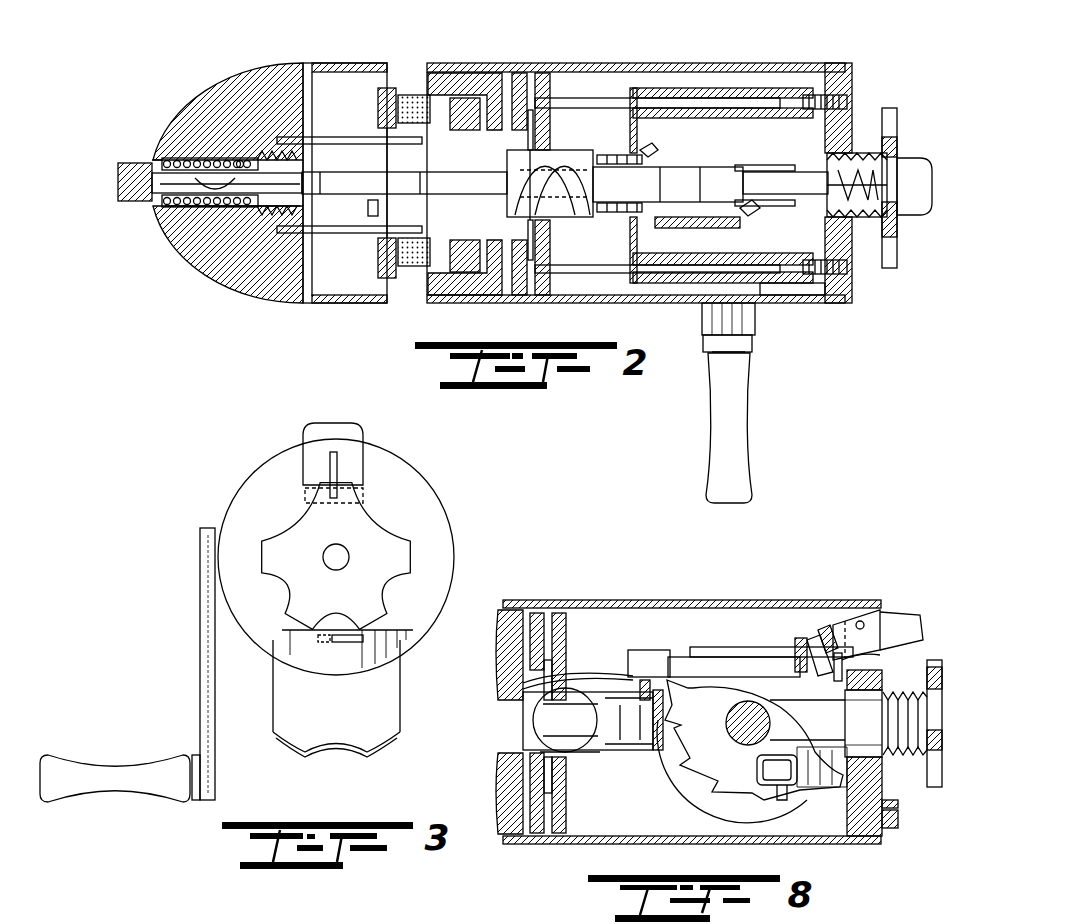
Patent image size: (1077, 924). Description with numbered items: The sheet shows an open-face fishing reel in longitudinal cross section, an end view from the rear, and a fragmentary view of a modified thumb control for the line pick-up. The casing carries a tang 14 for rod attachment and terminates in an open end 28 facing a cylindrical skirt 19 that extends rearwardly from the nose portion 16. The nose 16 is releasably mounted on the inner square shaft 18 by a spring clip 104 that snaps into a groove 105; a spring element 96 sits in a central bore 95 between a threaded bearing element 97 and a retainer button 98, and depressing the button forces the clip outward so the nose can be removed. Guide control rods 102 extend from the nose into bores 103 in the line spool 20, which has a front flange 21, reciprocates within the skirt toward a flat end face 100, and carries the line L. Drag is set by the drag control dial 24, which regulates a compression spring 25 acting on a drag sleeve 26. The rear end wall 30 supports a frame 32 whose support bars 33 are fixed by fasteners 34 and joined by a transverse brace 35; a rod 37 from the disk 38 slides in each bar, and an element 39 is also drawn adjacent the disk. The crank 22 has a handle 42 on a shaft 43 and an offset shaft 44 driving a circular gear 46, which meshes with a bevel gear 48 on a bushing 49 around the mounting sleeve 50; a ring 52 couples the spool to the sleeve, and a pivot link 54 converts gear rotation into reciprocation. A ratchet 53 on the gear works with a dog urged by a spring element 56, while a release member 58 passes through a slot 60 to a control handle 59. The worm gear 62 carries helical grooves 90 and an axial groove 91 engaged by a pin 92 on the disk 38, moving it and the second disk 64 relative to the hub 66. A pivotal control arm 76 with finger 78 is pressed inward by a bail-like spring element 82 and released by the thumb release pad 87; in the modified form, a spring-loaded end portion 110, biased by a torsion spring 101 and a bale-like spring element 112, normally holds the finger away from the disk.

In FIG. 3, the tang 14 is at (397, 683).
In FIG. 2, the nose portion 16 is at (235, 285).
In FIG. 2, the inner square shaft 18 is at (160, 192).
In FIG. 2, the cylindrical skirt 19 is at (335, 303).
In FIG. 2, the line spool 20 is at (378, 100).
In FIG. 2, the front flange 21 is at (378, 95).
In FIG. 2, the crank 22 is at (752, 343).
In FIG. 3, the crank 22 is at (202, 673).
In FIG. 2, the drag control dial 24 is at (892, 140).
In FIG. 3, the drag control dial 24 is at (300, 513).
In FIG. 2, the compression spring 25 is at (905, 165).
In FIG. 2, the drag sleeve 26 is at (805, 175).
In FIG. 2, the open end 28 is at (422, 63).
In FIG. 2, the rear end wall 30 is at (852, 290).
In FIG. 8, the rear end wall 30 is at (883, 770).
In FIG. 2, the frame 32 is at (796, 303).
In FIG. 2, the support bars 33 is at (700, 88).
In FIG. 2, the fastener 34 is at (847, 100).
In FIG. 2, the transverse brace 35 is at (630, 98).
In FIG. 2, the rod 37 is at (662, 108).
In FIG. 2, the disk 38 is at (545, 73).
In FIG. 8, the disk 38 is at (558, 613).
In FIG. 2, the pin 39 is at (530, 297).
In FIG. 8, the pin 39 is at (552, 805).
In FIG. 2, the handle 42 is at (747, 422).
In FIG. 3, the handle 42 is at (138, 765).
In FIG. 2, the shaft 43 is at (730, 354).
In FIG. 2, the offset shaft 44 is at (757, 303).
In FIG. 2, the circular gear 46 is at (652, 224).
In FIG. 2, the bevel gear 48 is at (652, 150).
In FIG. 2, the bushing 49 is at (640, 172).
In FIG. 2, the mounting sleeve 50 is at (730, 172).
In FIG. 2, the ring 52 is at (368, 207).
In FIG. 8, the ratchet 53 is at (705, 777).
In FIG. 2, the pivot link 54 is at (745, 190).
In FIG. 8, the spring element 56 is at (778, 787).
In FIG. 8, the release member 58 is at (898, 804).
In FIG. 3, the control handle 59 is at (400, 644).
In FIG. 8, the control handle 59 is at (898, 826).
In FIG. 3, the slot 60 is at (327, 640).
In FIG. 2, the worm gear 62 is at (565, 217).
In FIG. 8, the worm gear 62 is at (575, 750).
In FIG. 2, the second disk 64 is at (518, 73).
In FIG. 8, the second disk 64 is at (535, 613).
In FIG. 2, the hub 66 is at (470, 73).
In FIG. 8, the hub 66 is at (505, 613).
In FIG. 8, the pivotal control arm 76 is at (632, 650).
In FIG. 8, the finger 78 is at (586, 672).
In FIG. 8, the bail-like spring element 82 is at (628, 660).
In FIG. 3, the thumb release pad 87 is at (312, 433).
In FIG. 8, the lefthand helical groove 90 is at (540, 742).
In FIG. 8, the axial groove 91 is at (543, 722).
In FIG. 2, the pin 92 is at (540, 235).
In FIG. 2, the central bore 95 is at (210, 160).
In FIG. 2, the spring element 96 is at (190, 240).
In FIG. 2, the threaded bearing element 97 is at (263, 157).
In FIG. 2, the retainer button 98 is at (135, 165).
In FIG. 2, the flat end face 100 is at (305, 270).
In FIG. 8, the torsion spring 101 is at (810, 640).
In FIG. 2, the guide control rods 102 is at (335, 233).
In FIG. 2, the bores 103 is at (400, 137).
In FIG. 2, the spring clip 104 is at (177, 160).
In FIG. 2, the groove 105 is at (195, 197).
In FIG. 8, the pivotal end portion 110 is at (795, 644).
In FIG. 8, the bale-like spring element 112 is at (845, 668).
In FIG. 2, the line L is at (415, 268).